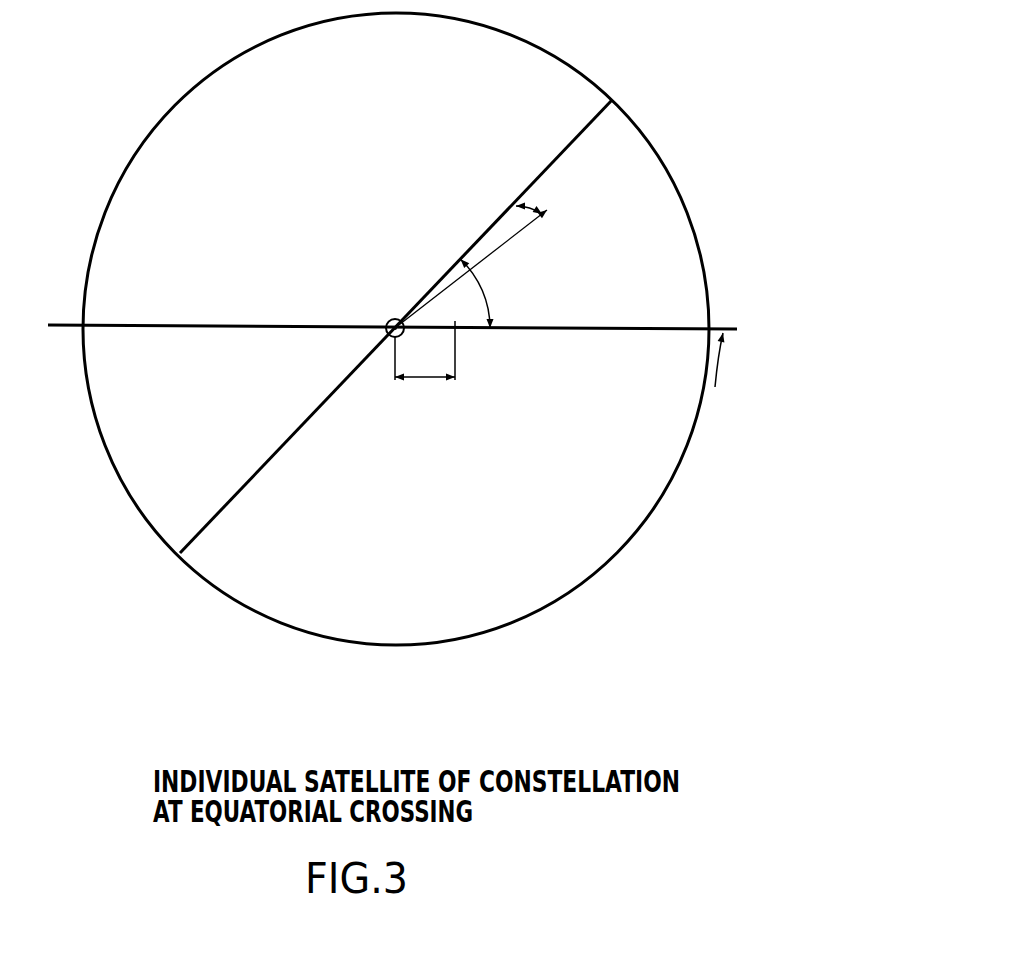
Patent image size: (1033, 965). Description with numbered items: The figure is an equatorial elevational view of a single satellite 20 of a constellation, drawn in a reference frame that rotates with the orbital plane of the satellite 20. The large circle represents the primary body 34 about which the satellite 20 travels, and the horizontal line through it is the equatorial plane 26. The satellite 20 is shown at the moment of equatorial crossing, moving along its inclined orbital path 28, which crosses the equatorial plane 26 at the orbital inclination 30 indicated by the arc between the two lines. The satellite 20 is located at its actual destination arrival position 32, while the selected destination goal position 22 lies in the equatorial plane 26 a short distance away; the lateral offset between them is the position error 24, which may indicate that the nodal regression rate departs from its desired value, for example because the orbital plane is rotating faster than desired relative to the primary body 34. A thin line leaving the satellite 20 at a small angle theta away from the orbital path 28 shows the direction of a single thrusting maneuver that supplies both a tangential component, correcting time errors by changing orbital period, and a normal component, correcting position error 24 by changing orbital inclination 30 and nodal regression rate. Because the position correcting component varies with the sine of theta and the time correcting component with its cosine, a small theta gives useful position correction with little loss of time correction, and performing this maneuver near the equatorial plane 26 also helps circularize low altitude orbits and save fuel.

The satellite 20 is at (393, 316).
The destination goal position 22 is at (457, 333).
The position error 24 is at (428, 378).
The equatorial plane 26 is at (603, 333).
The orbital path 28 is at (258, 478).
The orbital inclination 30 is at (487, 293).
The actual destination arrival position 32 is at (393, 338).
The primary body 34 is at (668, 220).
The thrust angle theta is at (543, 210).